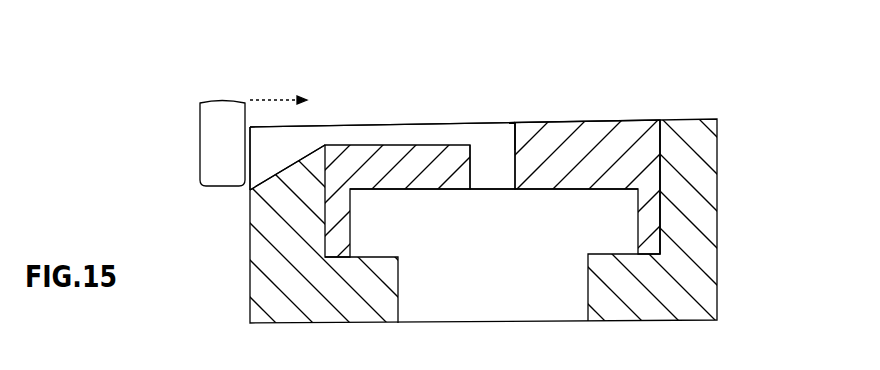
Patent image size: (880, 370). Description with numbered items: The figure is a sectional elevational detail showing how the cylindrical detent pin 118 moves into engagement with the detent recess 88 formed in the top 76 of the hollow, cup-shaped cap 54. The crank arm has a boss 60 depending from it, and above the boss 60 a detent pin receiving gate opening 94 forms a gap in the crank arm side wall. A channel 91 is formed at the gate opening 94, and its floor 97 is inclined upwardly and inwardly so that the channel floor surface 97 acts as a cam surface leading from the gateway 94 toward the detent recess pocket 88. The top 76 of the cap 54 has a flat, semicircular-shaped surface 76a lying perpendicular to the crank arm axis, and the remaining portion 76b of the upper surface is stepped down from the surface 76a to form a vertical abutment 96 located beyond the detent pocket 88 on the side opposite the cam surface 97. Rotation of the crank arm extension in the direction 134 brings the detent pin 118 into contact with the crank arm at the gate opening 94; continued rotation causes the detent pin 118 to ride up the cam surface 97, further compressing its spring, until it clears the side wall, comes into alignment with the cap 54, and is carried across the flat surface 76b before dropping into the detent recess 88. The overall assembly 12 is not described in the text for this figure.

The valve assembly 12 is at (180, 4).
The cap 54 is at (658, 153).
The boss 60 is at (718, 259).
The top 76 is at (470, 170).
The flat semicircular-shaped surface 76a is at (627, 118).
The remaining portion of the upper surface 76b is at (428, 145).
The detent recess 88 is at (482, 157).
The channel 91 is at (395, 137).
The detent pin receiving gate opening 94 is at (258, 153).
The vertical abutment 96 is at (513, 128).
The channel floor 97 is at (302, 158).
The detent pin 118 is at (213, 160).
The direction of rotation 134 is at (274, 98).